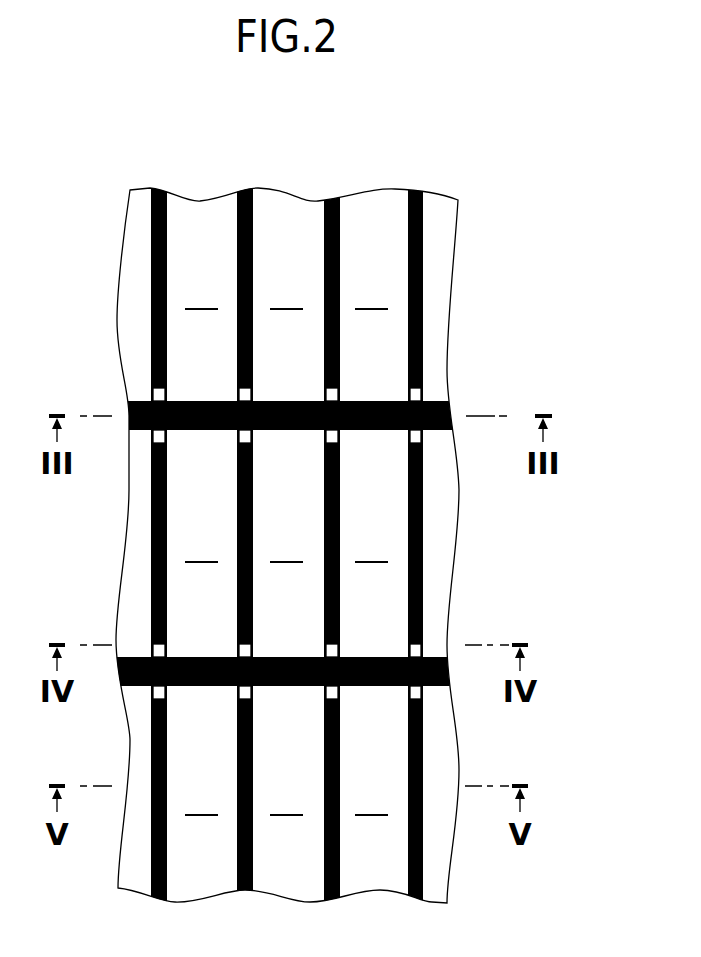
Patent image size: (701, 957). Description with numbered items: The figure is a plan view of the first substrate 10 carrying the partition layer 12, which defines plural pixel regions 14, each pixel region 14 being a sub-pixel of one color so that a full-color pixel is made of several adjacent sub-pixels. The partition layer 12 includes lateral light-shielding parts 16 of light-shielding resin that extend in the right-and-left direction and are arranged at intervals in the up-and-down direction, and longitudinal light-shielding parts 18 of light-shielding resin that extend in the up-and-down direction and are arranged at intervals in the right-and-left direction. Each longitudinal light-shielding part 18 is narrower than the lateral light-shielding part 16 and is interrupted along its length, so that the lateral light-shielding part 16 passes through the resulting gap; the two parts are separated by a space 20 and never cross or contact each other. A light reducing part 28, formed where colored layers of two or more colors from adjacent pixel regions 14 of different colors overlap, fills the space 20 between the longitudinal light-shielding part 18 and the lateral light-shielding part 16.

The first substrate 10 is at (376, 166).
The partition layer 12 is at (354, 545).
The pixel region 14 is at (286, 547).
The lateral light-shielding part 16 is at (438, 408).
The longitudinal light-shielding part 18 is at (331, 236).
The space 20 is at (419, 439).
The light reducing part 28 is at (420, 393).